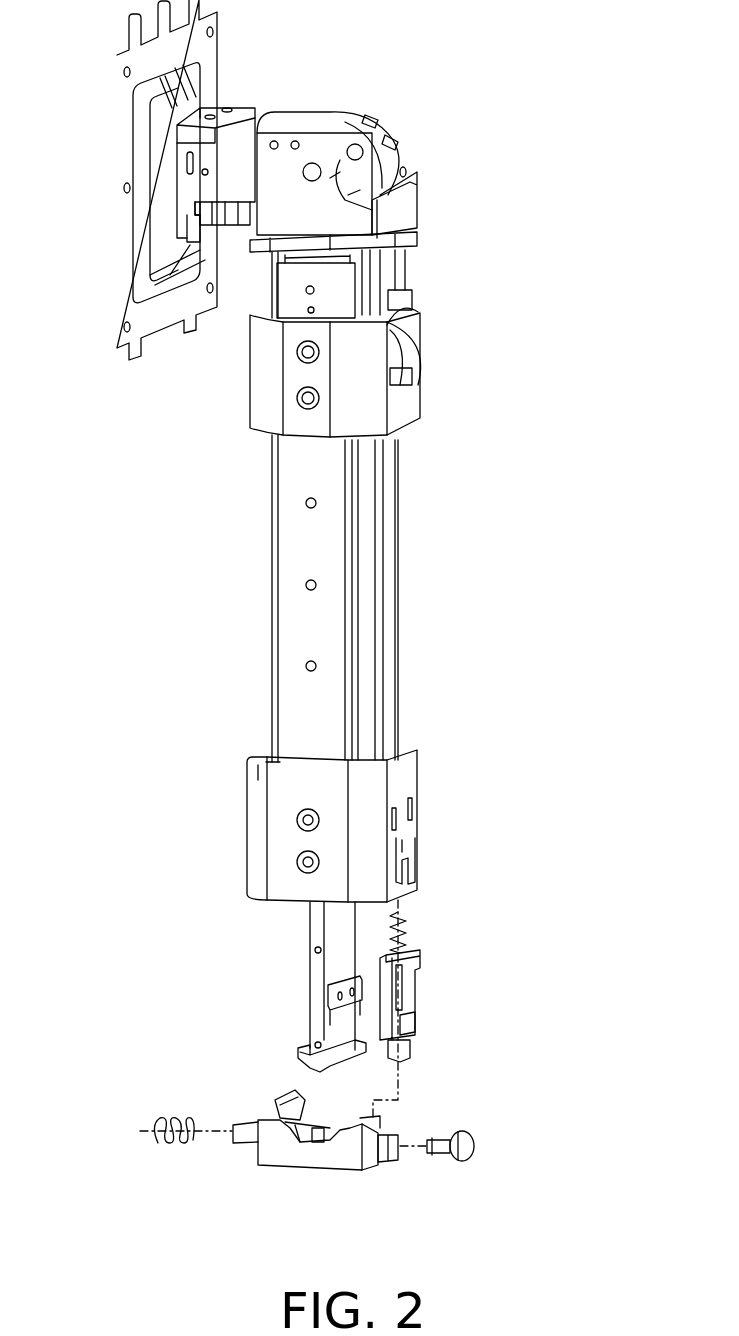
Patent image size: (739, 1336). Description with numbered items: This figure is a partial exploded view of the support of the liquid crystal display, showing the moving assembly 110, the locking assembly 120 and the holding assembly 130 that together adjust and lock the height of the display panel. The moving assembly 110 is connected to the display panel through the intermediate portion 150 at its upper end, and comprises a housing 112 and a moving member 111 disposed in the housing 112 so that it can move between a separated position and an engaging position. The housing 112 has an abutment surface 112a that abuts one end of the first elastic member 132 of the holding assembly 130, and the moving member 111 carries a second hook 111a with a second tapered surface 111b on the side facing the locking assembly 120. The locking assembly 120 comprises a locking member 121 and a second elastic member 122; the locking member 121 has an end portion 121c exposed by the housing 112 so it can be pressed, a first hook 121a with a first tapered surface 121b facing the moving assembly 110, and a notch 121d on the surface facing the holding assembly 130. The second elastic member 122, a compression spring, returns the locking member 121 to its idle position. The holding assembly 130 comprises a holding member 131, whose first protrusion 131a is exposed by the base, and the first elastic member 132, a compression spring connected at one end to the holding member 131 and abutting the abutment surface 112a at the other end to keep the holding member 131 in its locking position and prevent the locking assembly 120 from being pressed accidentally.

The moving assembly 110 is at (309, 911).
The moving member 111 is at (233, 987).
The second hook 111a is at (322, 1035).
The second tapered surface 111b is at (325, 1050).
The housing 112 is at (348, 826).
The abutment surface 112a is at (410, 848).
The locking assembly 120 is at (354, 1147).
The locking member 121 is at (373, 1122).
The first hook 121a is at (280, 1102).
The first tapered surface 121b is at (318, 1098).
The end portion 121c is at (450, 1160).
The notch 121d is at (385, 1135).
The second elastic member 122 is at (168, 1148).
The holding assembly 130 is at (498, 1008).
The holding member 131 is at (474, 1007).
The first protrusion 131a is at (402, 1050).
The first elastic member 132 is at (410, 925).
The intermediate portion 150 is at (420, 312).